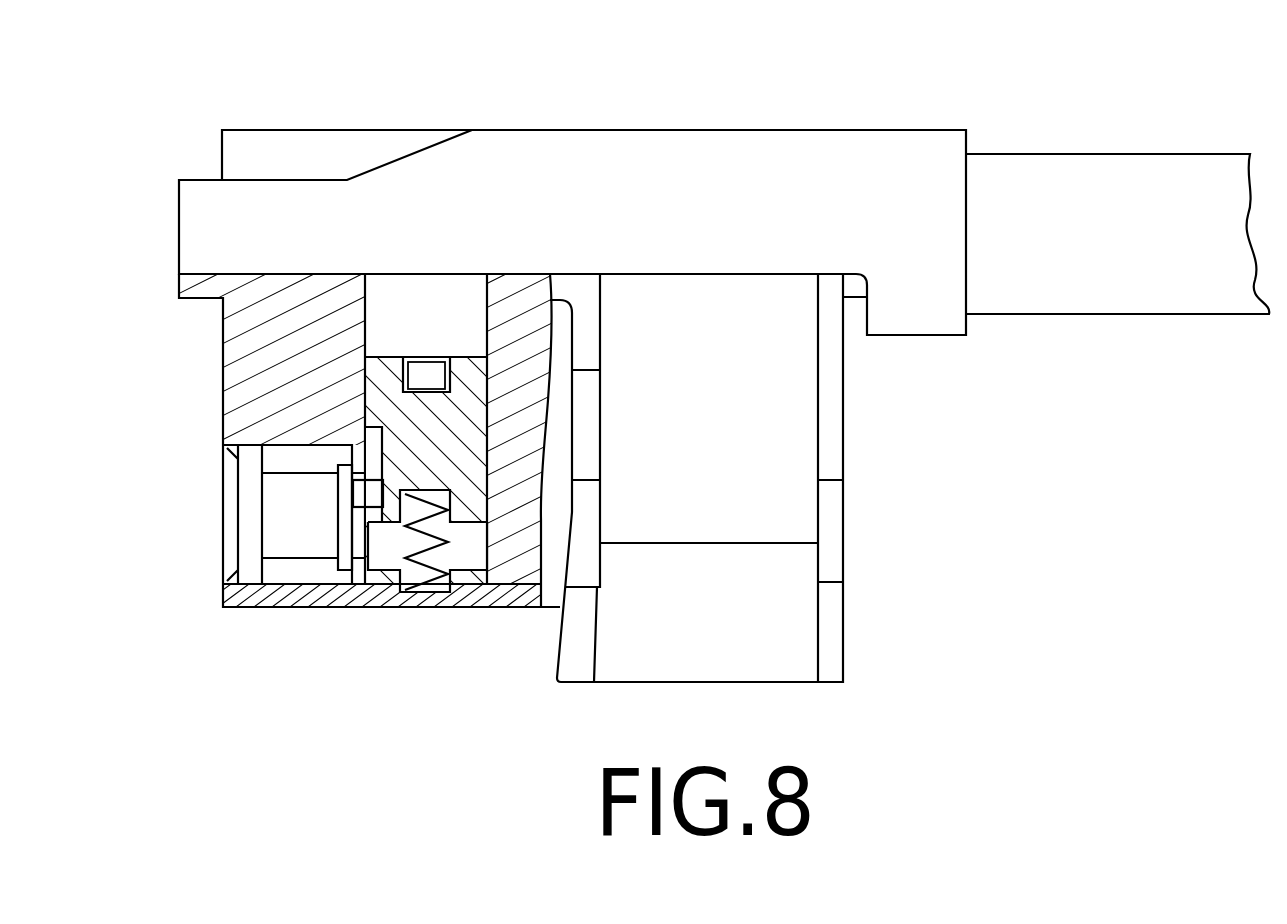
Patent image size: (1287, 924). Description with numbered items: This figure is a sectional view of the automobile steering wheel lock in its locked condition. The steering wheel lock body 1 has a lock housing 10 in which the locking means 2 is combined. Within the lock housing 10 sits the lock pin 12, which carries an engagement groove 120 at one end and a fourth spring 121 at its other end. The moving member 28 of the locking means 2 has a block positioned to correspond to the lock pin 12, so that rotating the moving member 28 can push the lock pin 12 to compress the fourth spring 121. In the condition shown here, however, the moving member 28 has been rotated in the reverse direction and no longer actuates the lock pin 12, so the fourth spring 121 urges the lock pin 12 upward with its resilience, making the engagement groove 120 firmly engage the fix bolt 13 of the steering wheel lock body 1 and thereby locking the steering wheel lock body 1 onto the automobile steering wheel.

The steering wheel lock body 1 is at (925, 150).
The locking means 2 is at (285, 528).
The lock housing 10 is at (305, 462).
The lock pin 12 is at (470, 410).
The fix bolt 13 is at (423, 380).
The moving member 28 is at (363, 493).
The engagement groove 120 is at (403, 385).
The fourth spring 121 is at (398, 568).